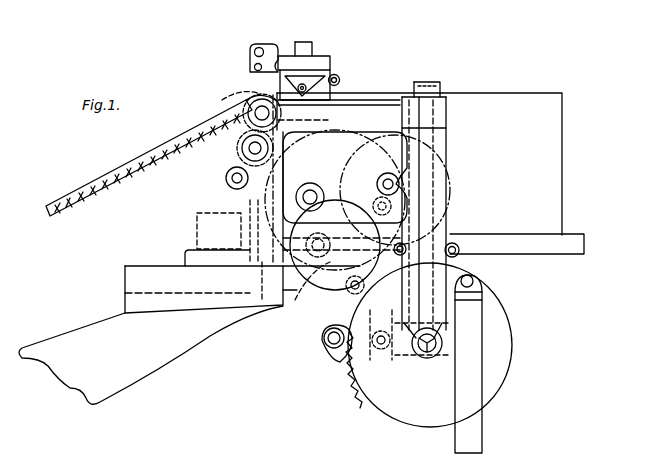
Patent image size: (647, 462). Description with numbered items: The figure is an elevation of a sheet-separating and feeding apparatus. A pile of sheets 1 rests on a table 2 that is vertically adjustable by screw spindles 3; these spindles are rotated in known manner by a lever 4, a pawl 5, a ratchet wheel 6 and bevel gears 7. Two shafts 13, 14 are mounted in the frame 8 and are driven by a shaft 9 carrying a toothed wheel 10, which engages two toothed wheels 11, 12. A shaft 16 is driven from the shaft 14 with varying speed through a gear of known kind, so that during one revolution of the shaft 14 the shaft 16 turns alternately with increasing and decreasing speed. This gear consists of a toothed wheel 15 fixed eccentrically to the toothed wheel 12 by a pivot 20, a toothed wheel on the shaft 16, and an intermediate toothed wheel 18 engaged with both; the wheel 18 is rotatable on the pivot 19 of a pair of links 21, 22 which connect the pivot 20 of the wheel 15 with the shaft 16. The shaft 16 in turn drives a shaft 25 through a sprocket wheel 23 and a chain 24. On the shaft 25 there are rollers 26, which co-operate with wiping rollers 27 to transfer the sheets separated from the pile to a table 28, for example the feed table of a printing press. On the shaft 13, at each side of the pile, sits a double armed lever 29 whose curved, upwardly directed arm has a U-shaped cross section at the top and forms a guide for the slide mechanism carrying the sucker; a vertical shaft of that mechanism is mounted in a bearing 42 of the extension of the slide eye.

The pile of sheets 1 is at (552, 153).
The table 2 is at (528, 252).
The screw spindles 3 is at (438, 224).
The lever 4 is at (397, 355).
The pawl 5 is at (338, 362).
The ratchet wheel 6 is at (364, 388).
The bevel gears 7 is at (428, 358).
The frame 8 is at (273, 293).
The shaft 9 is at (258, 225).
The toothed wheel 10 is at (312, 183).
The toothed wheel 11 is at (225, 182).
The toothed wheel 12 is at (401, 96).
The shaft 13 is at (240, 152).
The shaft 14 is at (387, 173).
The toothed wheel 15 is at (376, 210).
The shaft 16 is at (300, 290).
The toothed wheel 18 is at (345, 300).
The pivot 19 is at (336, 305).
The pivot 20 is at (378, 203).
The link 21 is at (283, 293).
The link 22 is at (440, 229).
The sprocket wheel 23 is at (277, 320).
The chain 24 is at (258, 203).
The shaft 25 is at (254, 103).
The rollers 26 is at (226, 101).
The wiping rollers 27 is at (268, 82).
The table 28 is at (96, 186).
The double armed lever 29 is at (338, 112).
The bearing 42 is at (306, 50).